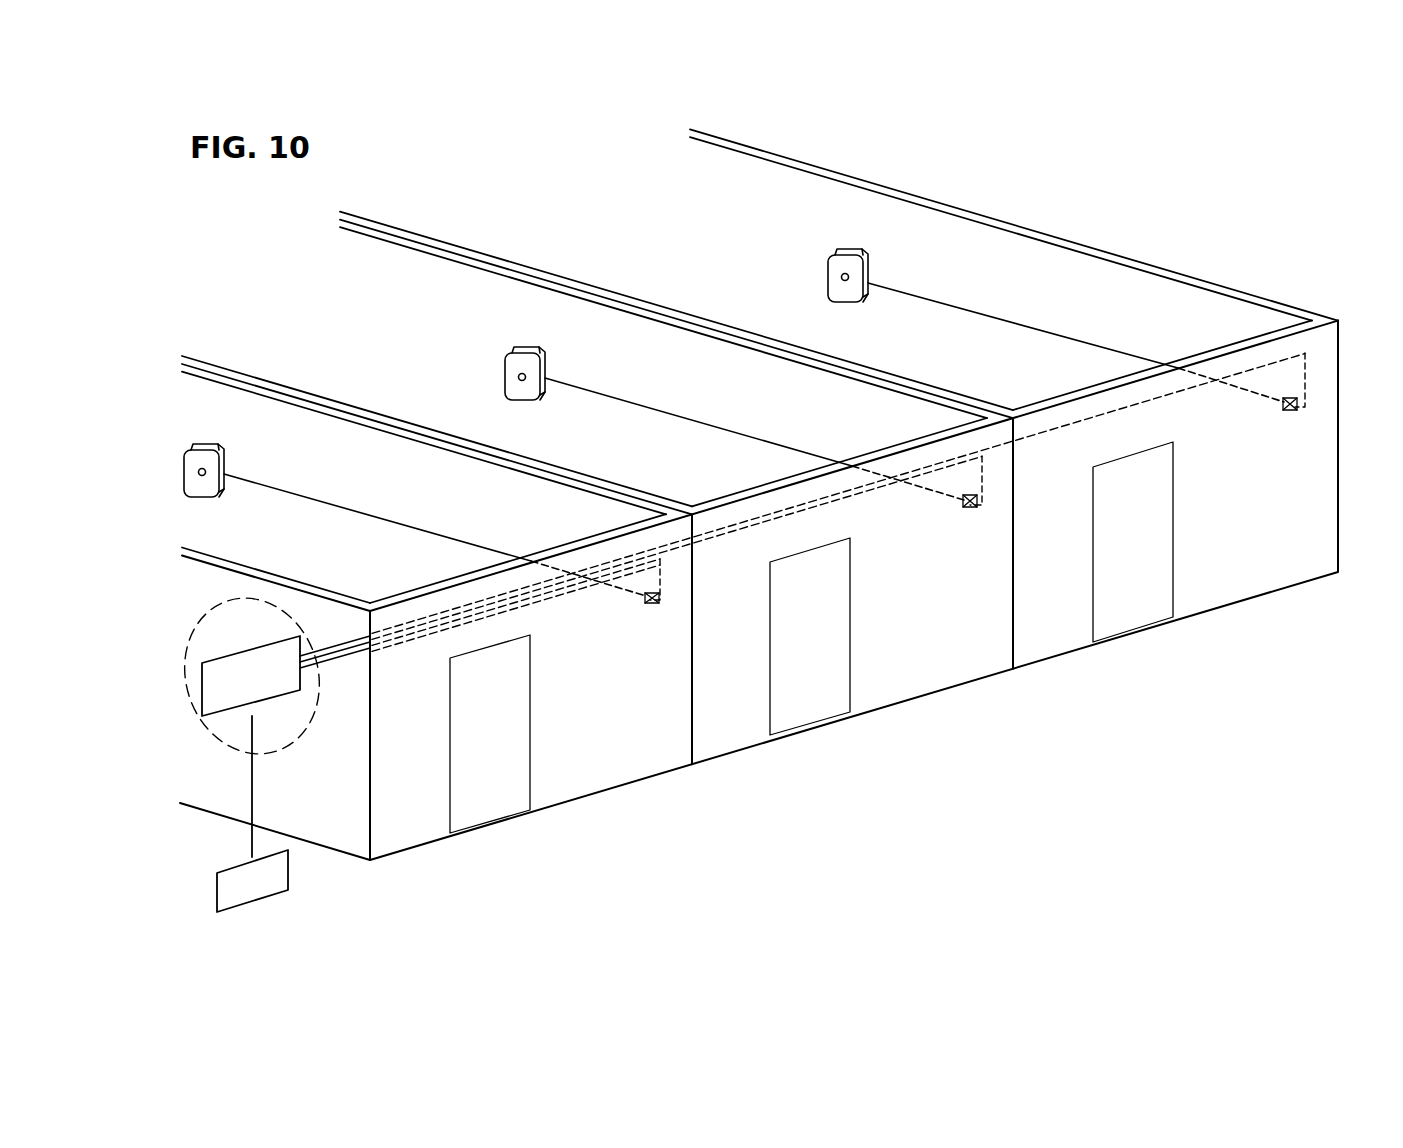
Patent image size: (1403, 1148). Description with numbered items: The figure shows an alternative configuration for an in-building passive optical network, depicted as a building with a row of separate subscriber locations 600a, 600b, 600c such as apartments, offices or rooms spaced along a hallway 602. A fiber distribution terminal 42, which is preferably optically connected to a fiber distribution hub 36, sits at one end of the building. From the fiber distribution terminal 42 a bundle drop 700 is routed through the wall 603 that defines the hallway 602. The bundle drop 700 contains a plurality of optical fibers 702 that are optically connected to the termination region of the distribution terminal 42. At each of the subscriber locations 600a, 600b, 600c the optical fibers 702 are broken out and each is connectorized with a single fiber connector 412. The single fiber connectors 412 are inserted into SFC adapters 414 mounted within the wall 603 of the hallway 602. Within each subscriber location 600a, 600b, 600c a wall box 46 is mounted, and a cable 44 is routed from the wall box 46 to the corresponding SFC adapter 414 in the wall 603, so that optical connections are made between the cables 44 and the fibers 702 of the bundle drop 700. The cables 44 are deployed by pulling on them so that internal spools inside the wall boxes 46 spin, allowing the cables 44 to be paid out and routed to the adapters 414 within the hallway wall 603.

The fiber distribution hub 36 is at (290, 880).
The fiber distribution terminal 42 is at (233, 612).
The cables 44 is at (432, 530).
The wall boxes 46 is at (220, 452).
The single fiber connector 412 is at (642, 597).
The SFC adapters 414 is at (652, 592).
The subscriber location 600a is at (322, 440).
The subscriber location 600b is at (530, 300).
The subscriber location 600c is at (850, 207).
The hallway 602 is at (868, 786).
The wall 603 is at (617, 752).
The bundle drop 700 is at (540, 605).
The optical fibers 702 is at (430, 627).